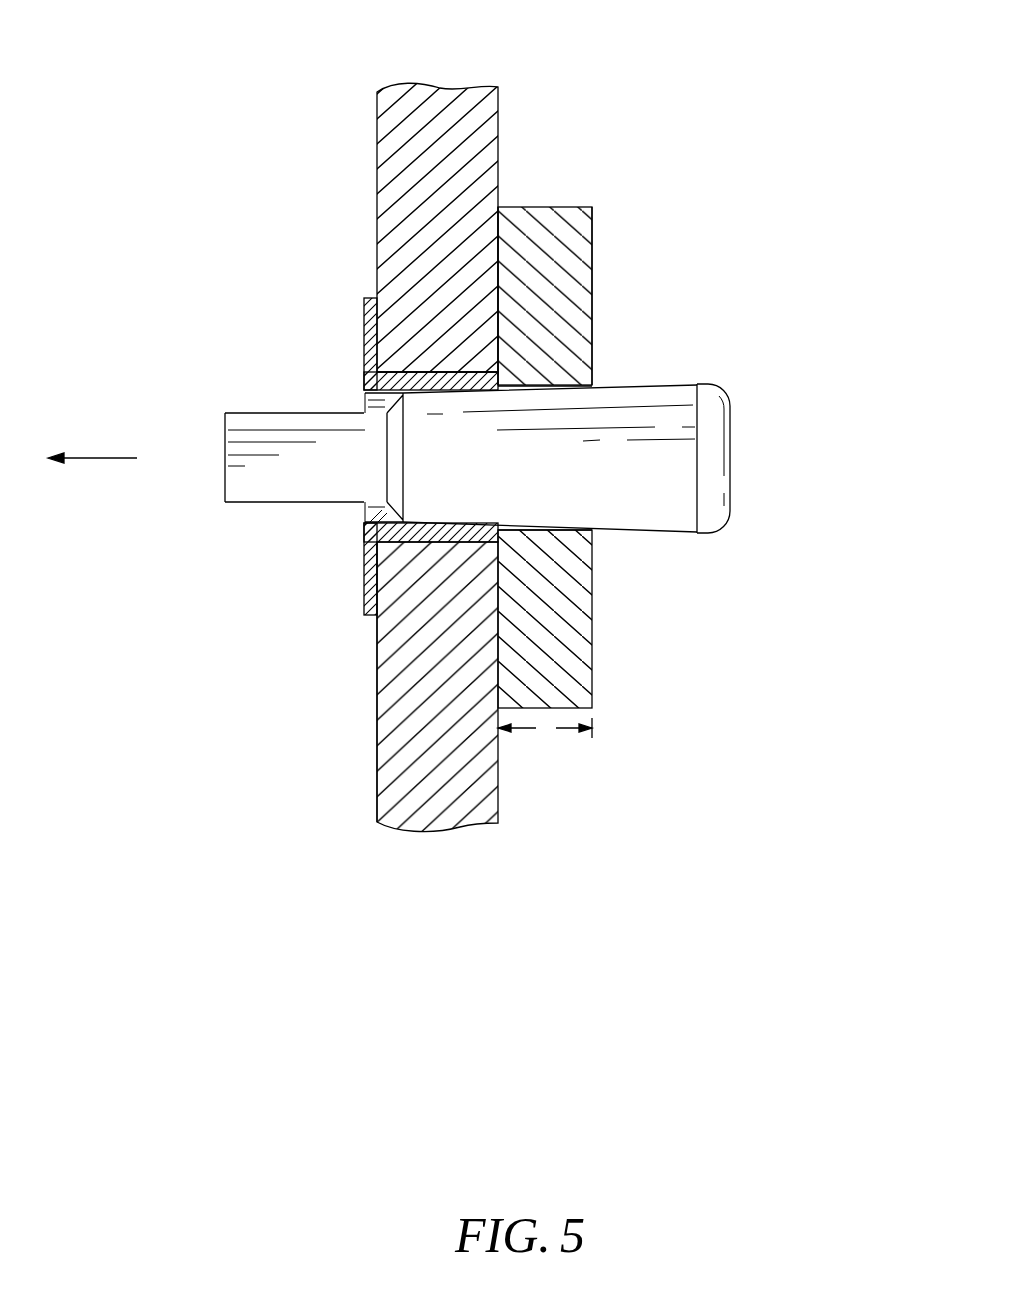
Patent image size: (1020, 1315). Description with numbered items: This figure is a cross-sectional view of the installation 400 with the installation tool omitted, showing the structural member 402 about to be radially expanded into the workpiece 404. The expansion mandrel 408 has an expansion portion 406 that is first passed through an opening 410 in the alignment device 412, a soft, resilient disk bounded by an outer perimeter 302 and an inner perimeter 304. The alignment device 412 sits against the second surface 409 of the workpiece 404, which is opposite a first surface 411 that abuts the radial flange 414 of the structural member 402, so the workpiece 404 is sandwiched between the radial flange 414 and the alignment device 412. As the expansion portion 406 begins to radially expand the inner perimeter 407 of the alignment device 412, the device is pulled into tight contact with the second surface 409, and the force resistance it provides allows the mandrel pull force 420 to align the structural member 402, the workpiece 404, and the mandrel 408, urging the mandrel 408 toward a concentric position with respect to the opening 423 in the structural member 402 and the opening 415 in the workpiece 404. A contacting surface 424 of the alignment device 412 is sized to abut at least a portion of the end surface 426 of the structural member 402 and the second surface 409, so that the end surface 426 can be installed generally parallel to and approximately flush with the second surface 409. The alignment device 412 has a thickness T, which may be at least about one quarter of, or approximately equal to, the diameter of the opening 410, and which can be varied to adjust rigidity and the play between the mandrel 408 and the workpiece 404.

The installation 400 is at (771, 82).
The outer perimeter 302 is at (548, 200).
The inner perimeter 304 is at (552, 394).
The structural member 402 is at (373, 298).
The workpiece 404 is at (498, 115).
The expansion portion 406 is at (689, 385).
The inner perimeter 407 is at (365, 515).
The expansion mandrel 408 is at (735, 508).
The second surface 409 is at (500, 757).
The opening 410 is at (604, 535).
The first surface 411 is at (375, 762).
The alignment device 412 is at (592, 248).
The radial flange 414 is at (363, 595).
The opening 415 is at (430, 376).
The mandrel pull force 420 is at (90, 458).
The opening 423 is at (357, 388).
The contacting surface 424 is at (498, 207).
The end surface 426 is at (520, 532).